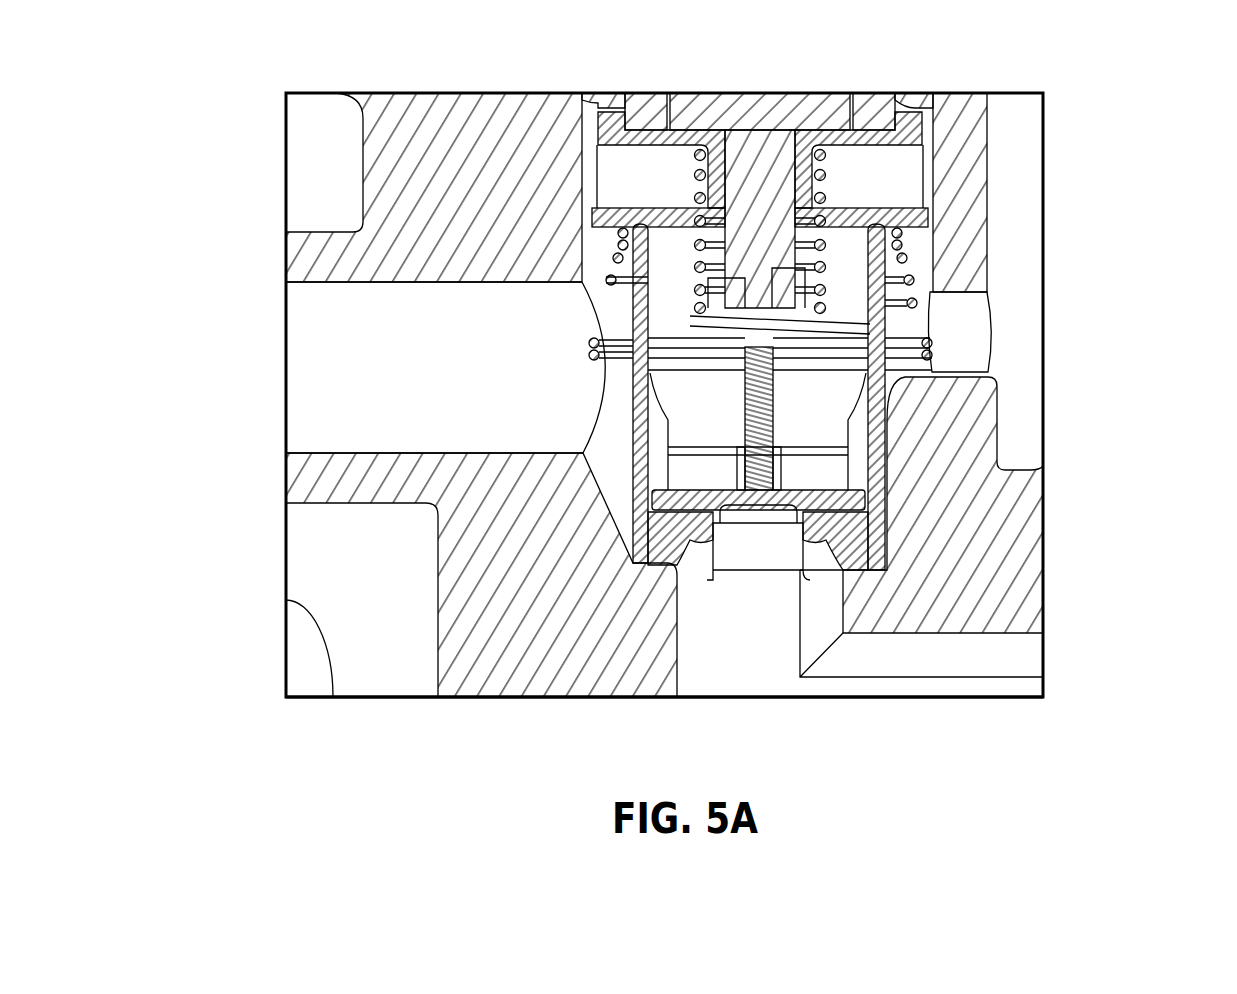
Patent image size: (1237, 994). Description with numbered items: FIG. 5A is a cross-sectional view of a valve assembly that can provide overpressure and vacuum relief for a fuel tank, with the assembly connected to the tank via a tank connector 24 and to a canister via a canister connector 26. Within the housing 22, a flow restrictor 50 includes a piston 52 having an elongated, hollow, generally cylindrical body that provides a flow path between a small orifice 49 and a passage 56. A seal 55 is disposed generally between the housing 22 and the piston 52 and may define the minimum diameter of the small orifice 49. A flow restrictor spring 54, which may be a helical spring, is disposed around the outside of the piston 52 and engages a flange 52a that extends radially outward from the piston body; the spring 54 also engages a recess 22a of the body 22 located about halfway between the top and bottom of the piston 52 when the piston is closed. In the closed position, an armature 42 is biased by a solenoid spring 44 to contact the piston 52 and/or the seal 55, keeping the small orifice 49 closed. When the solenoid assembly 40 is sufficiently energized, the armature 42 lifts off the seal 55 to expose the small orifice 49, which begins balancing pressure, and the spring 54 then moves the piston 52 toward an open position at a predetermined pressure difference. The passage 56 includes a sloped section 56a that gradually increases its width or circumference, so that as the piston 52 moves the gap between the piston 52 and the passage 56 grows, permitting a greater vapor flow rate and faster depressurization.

The housing 22 is at (1002, 553).
The recess 22a is at (944, 378).
The tank connector 24 is at (318, 348).
The canister connector 26 is at (1022, 700).
The solenoid assembly 40 is at (860, 105).
The armature 42 is at (780, 330).
The solenoid spring 44 is at (820, 185).
The small orifice 49 is at (757, 566).
The flow restrictor 50 is at (495, 228).
The piston 52 is at (890, 522).
The flange 52a is at (920, 215).
The flow restrictor spring 54 is at (937, 353).
The seal 55 is at (822, 553).
The passage 56 is at (603, 422).
The sloped section 56a is at (592, 505).